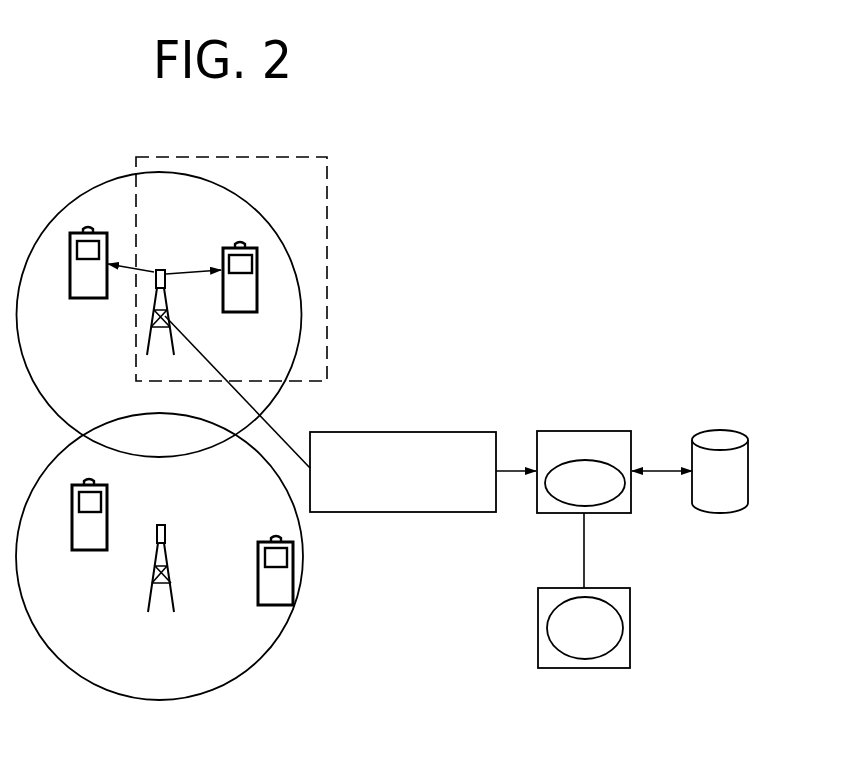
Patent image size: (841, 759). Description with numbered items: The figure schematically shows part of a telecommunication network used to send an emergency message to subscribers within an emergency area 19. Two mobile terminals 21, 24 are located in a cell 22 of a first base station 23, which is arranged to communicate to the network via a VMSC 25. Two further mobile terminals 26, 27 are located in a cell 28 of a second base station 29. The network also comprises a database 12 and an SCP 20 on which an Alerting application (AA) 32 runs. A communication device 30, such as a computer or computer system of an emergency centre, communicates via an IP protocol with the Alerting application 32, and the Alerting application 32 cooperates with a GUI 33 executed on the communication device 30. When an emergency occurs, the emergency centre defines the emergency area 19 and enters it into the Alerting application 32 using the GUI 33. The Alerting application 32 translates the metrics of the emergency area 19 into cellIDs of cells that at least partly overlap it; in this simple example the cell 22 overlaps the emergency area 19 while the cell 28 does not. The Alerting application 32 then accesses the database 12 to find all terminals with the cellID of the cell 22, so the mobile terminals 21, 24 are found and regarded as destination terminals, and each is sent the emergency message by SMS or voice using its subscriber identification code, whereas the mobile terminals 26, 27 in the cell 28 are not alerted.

The database 12 is at (735, 487).
The emergency area 19 is at (327, 358).
The SCP 20 is at (600, 431).
The mobile terminal 21 is at (83, 270).
The cell 22 is at (290, 257).
The first base station 23 is at (157, 313).
The mobile terminal 24 is at (242, 294).
The VMSC 25 is at (386, 432).
The mobile terminal 26 is at (83, 522).
The mobile terminal 27 is at (268, 577).
The cell 28 is at (293, 599).
The second base station 29 is at (163, 525).
The communication device 30 is at (605, 668).
The Alerting application 32 is at (605, 500).
The GUI 33 is at (563, 644).